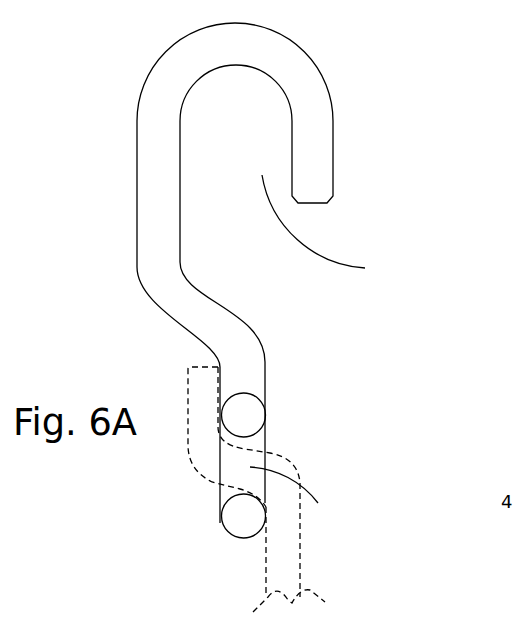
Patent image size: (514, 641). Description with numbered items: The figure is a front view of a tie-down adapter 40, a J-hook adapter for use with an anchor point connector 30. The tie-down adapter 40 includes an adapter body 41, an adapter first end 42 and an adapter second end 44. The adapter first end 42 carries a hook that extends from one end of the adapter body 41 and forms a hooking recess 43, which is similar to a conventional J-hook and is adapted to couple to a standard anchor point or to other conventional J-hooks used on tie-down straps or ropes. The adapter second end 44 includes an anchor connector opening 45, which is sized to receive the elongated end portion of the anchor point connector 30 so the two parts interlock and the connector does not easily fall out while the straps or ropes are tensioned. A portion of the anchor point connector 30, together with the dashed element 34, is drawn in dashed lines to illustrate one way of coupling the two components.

The anchor point connector 30 is at (300, 567).
The bracket 34 is at (187, 407).
The tie-down adapter 40 is at (278, 270).
The adapter body 41 is at (137, 242).
The adapter first end 42 is at (303, 52).
The hooking recess 43 is at (332, 230).
The adapter second end 44 is at (265, 428).
The anchor connector opening 45 is at (293, 501).